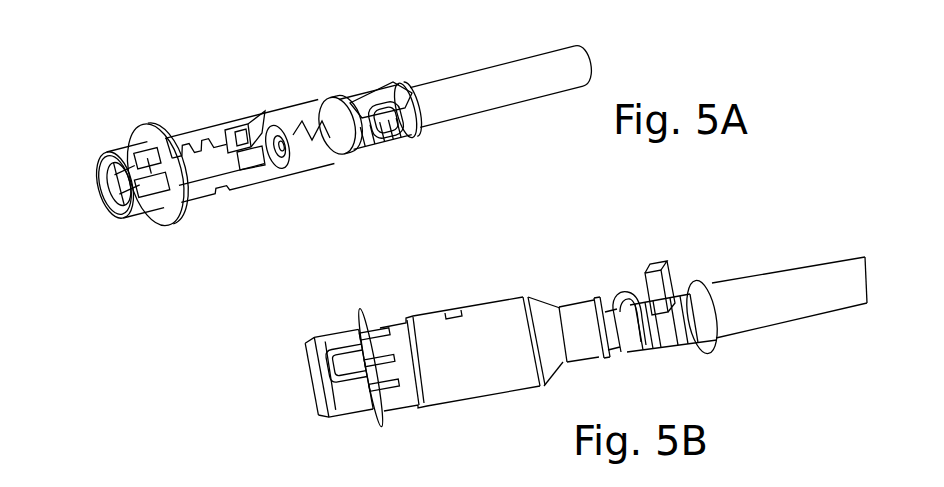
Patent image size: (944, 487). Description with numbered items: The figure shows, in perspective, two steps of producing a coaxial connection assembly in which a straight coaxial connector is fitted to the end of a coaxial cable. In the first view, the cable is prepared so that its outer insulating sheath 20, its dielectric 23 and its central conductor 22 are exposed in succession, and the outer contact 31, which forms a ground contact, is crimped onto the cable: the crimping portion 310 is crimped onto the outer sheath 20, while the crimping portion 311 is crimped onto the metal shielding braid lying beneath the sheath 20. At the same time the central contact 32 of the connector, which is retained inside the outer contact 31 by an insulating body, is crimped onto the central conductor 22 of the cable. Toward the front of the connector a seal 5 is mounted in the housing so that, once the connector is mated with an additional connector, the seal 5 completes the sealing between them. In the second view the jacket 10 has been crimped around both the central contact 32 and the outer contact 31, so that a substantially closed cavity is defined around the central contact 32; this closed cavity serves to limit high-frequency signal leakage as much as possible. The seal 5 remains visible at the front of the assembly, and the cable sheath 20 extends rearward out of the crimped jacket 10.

In FIG. 5A, the seal 5 is at (146, 118).
In FIG. 5B, the seal 5 is at (360, 308).
In FIG. 5B, the jacket 10 is at (487, 328).
In FIG. 5A, the outer insulating sheath 20 is at (537, 75).
In FIG. 5B, the outer insulating sheath 20 is at (760, 290).
In FIG. 5A, the central conductor 22 is at (280, 172).
In FIG. 5A, the dielectric 23 is at (296, 168).
In FIG. 5A, the outer contact 31 is at (95, 166).
In FIG. 5B, the outer contact 31 is at (302, 348).
In FIG. 5A, the central contact 32 is at (250, 118).
In FIG. 5A, the crimping portion 310 is at (340, 100).
In FIG. 5B, the crimping portion 310 is at (627, 287).
In FIG. 5A, the crimping portion 311 is at (283, 110).